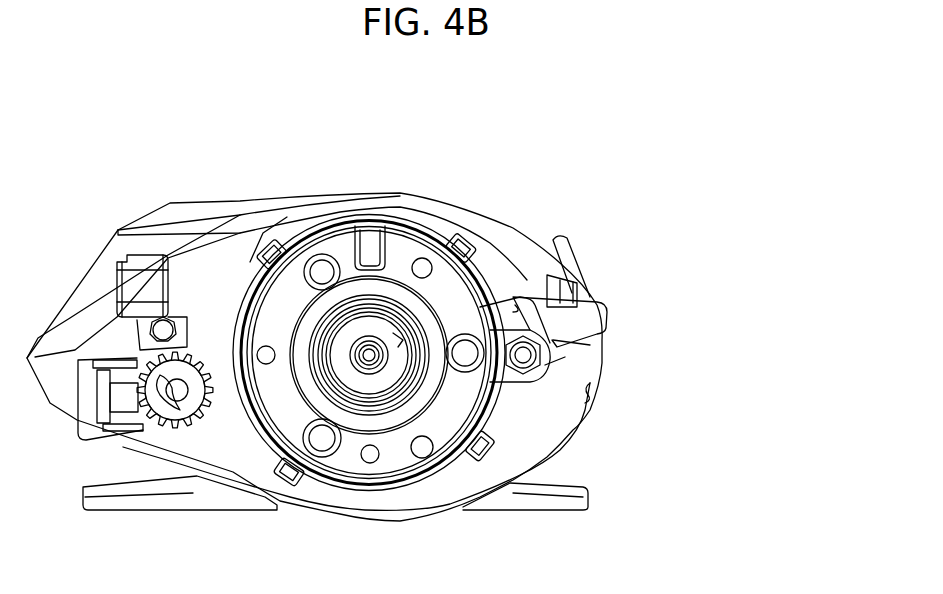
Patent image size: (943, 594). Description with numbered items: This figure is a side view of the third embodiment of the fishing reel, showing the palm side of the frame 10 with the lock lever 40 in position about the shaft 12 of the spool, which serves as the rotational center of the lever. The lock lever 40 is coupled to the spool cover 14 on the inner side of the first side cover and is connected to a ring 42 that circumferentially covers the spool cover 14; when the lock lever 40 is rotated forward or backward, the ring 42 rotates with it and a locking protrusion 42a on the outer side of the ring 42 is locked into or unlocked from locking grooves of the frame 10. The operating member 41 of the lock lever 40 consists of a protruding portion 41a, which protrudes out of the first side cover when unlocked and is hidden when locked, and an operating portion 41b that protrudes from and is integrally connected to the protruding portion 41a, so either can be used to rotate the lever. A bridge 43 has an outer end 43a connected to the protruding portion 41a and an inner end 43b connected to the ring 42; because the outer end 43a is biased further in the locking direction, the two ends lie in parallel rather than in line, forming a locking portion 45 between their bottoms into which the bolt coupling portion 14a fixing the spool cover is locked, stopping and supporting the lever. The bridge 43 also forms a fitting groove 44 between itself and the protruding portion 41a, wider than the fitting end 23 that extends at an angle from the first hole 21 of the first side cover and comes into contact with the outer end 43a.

The frame 10 is at (563, 435).
The shaft 12 is at (378, 349).
The spool cover 14 is at (285, 415).
The bolt coupling portion 14a is at (514, 380).
The first hole 21 is at (595, 398).
The fitting end 23 is at (520, 292).
The lock lever 40 is at (650, 323).
The operating member 41 is at (662, 272).
The protruding portion 41a is at (568, 243).
The operating portion 41b is at (592, 325).
The ring 42 is at (211, 237).
The locking protrusion 42a is at (262, 247).
The bridge 43 is at (646, 392).
The outer end 43a is at (580, 350).
The inner end 43b is at (562, 350).
The fitting groove 44 is at (578, 299).
The locking portion 45 is at (477, 278).